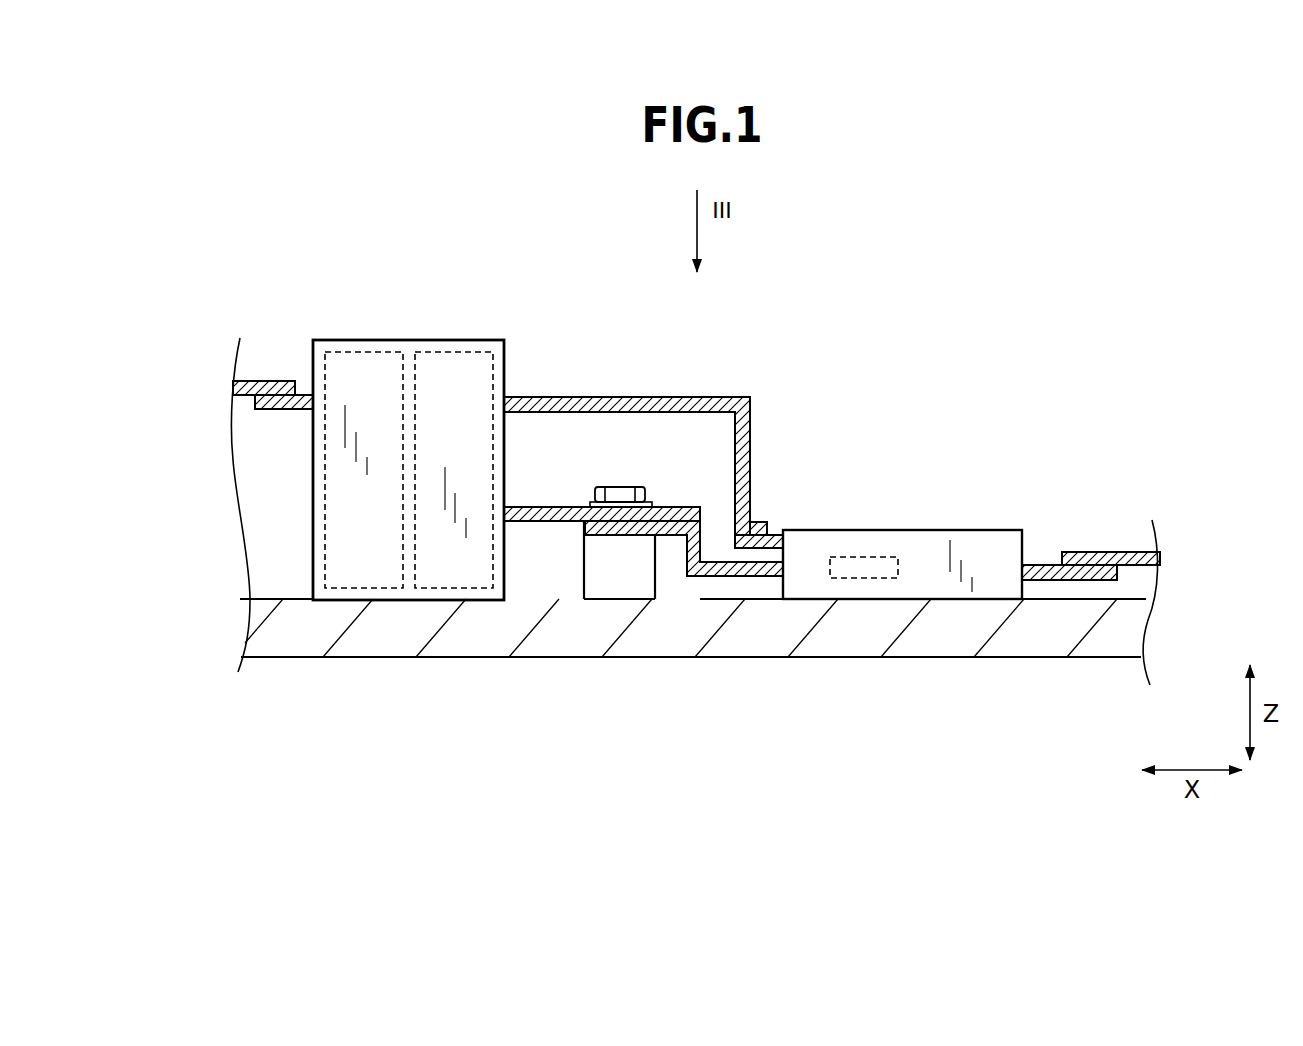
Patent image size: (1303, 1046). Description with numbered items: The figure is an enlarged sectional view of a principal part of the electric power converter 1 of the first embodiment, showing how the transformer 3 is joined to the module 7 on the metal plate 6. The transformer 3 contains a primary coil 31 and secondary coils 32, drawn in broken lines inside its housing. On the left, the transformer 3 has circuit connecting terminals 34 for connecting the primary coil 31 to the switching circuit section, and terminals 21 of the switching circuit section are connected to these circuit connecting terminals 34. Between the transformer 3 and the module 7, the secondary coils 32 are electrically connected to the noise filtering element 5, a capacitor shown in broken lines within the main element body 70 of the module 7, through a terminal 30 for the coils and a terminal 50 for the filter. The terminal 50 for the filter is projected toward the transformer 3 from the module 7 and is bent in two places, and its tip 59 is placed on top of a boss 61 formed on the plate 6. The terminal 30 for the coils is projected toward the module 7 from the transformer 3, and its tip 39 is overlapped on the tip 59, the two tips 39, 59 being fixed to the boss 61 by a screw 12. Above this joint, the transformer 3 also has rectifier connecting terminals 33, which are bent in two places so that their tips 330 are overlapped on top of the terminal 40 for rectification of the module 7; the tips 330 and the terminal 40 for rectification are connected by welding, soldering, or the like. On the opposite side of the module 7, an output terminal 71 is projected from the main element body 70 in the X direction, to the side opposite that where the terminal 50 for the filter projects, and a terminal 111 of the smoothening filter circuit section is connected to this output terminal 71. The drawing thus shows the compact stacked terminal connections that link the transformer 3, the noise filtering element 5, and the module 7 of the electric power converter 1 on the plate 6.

The electric power converter 1 is at (1084, 255).
The transformer 3 is at (409, 388).
The noise filtering element 5 is at (850, 567).
The metal plate 6 is at (694, 552).
The module 7 is at (978, 477).
The screw 12 is at (620, 495).
The terminals of the switching circuit section 21 is at (270, 381).
The terminal for the coils 30 is at (543, 513).
The primary coil 31 is at (363, 370).
The secondary coils 32 is at (452, 370).
The rectifier connecting terminals 33 is at (678, 384).
The circuit connecting terminals 34 is at (283, 409).
The tip of the terminal for the coils 39 is at (658, 508).
The terminal for rectification 40 is at (770, 541).
The terminal for the filter 50 is at (727, 568).
The tip of the terminal for the filter 59 is at (620, 530).
The boss 61 is at (593, 557).
The main element body 70 is at (868, 540).
The output terminal 71 is at (1053, 572).
The terminal of the smoothening filter circuit section 111 is at (1103, 555).
The tips of the rectifier connecting terminals 330 is at (766, 520).